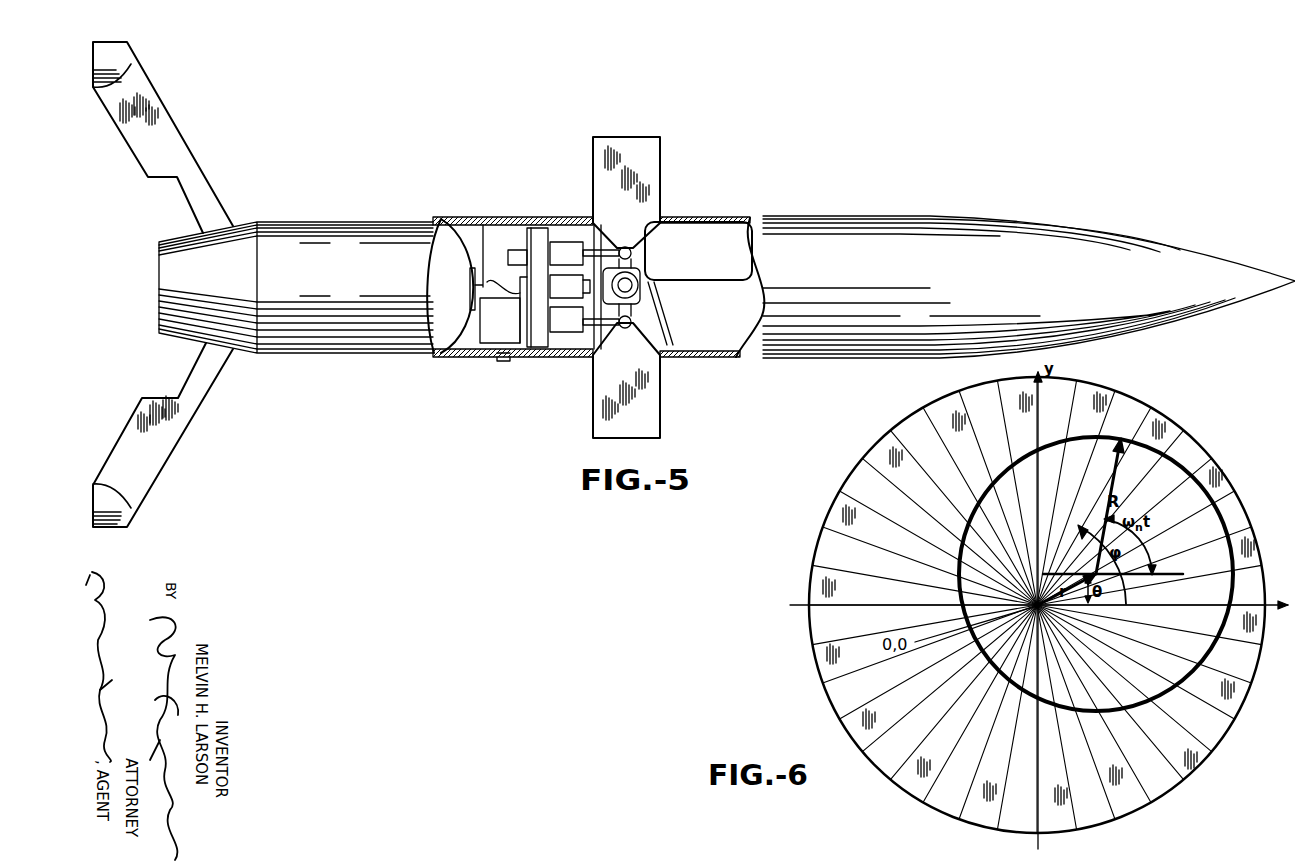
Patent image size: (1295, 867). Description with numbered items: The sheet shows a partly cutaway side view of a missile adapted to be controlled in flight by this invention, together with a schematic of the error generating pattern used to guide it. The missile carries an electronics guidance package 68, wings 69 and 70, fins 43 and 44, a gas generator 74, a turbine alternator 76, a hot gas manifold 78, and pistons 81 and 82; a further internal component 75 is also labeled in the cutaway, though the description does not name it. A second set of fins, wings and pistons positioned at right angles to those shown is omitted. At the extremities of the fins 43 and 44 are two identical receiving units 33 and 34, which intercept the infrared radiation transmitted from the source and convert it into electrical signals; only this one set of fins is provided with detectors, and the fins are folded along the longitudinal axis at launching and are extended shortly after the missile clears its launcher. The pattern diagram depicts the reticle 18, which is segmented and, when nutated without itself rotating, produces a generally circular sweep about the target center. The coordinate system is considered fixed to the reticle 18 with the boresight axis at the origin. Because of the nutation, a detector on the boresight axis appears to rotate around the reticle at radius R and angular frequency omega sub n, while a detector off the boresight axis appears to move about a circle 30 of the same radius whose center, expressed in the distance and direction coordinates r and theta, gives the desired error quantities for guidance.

In FIG. 6, the reticle 18 is at (1103, 825).
In FIG. 6, the circle 30 is at (1226, 513).
In FIG. 5, the receiving unit 33 is at (133, 70).
In FIG. 5, the receiving unit 34 is at (140, 509).
In FIG. 5, the fin 43 is at (178, 141).
In FIG. 5, the fin 44 is at (165, 448).
In FIG. 5, the electronics guidance package 68 is at (708, 259).
In FIG. 5, the wing 69 is at (652, 164).
In FIG. 5, the wing 70 is at (652, 414).
In FIG. 5, the gas generator 74 is at (577, 297).
In FIG. 5, the switch 75 is at (516, 250).
In FIG. 5, the turbine alternator 76 is at (510, 330).
In FIG. 5, the hot gas manifold 78 is at (521, 354).
In FIG. 5, the piston 81 is at (577, 330).
In FIG. 5, the piston 82 is at (577, 263).